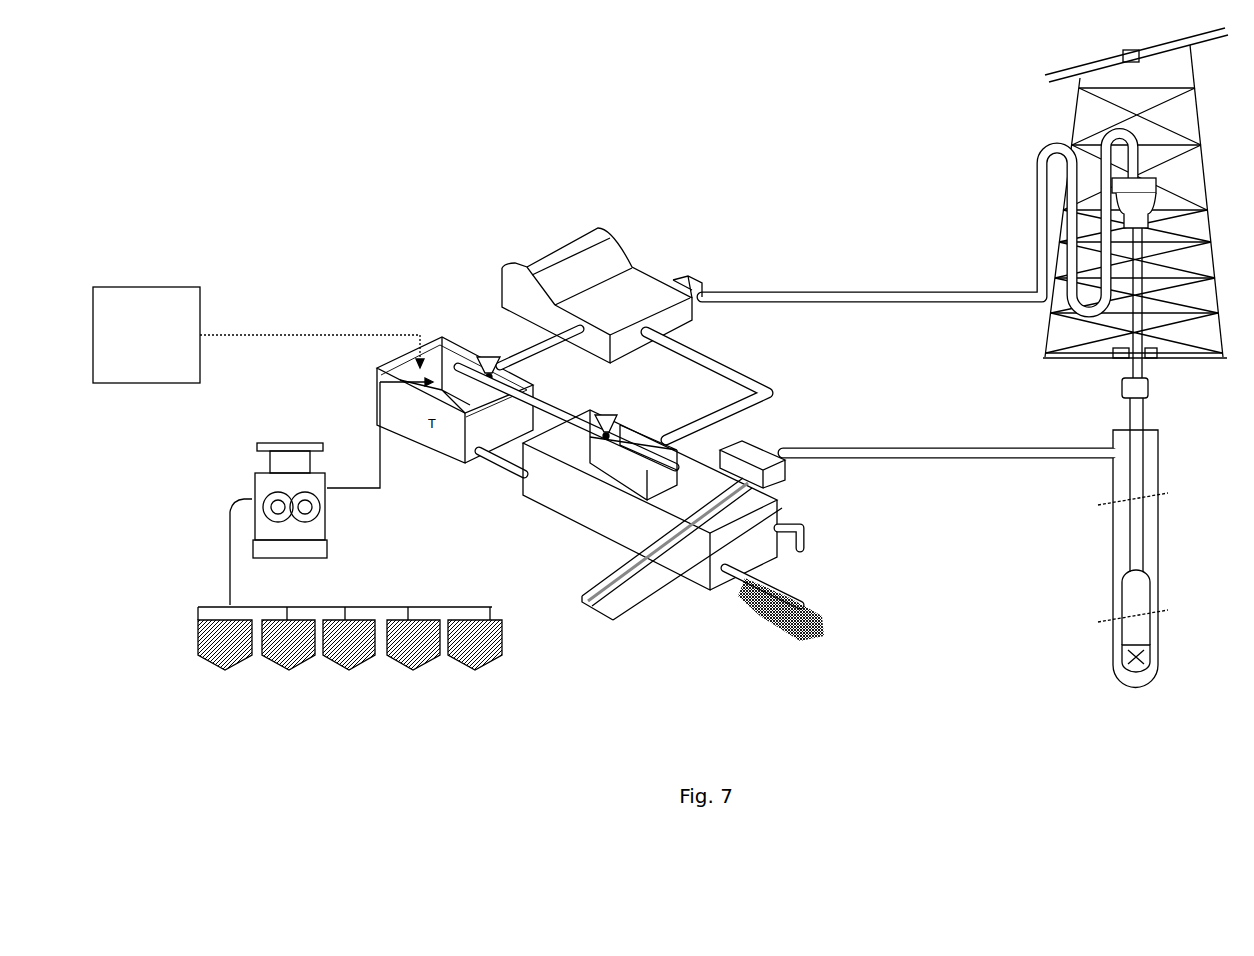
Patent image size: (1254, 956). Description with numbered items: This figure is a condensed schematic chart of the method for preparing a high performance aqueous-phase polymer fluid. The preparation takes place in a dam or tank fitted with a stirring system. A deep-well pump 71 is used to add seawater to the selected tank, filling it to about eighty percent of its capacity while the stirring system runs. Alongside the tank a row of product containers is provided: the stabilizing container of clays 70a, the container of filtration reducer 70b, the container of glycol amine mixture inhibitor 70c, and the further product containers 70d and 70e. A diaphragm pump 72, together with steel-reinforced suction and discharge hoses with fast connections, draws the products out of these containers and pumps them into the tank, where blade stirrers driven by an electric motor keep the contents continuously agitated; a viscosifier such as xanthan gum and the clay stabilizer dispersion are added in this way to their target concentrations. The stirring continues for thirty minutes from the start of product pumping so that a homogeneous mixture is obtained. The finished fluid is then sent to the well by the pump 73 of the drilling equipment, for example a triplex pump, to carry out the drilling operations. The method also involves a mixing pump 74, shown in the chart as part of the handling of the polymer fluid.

The stabilizing container of clays 70a is at (225, 690).
The container of filtration reducer 70b is at (283, 690).
The container of glycol amine mixture inhibitor 70c is at (345, 690).
The product container 70d is at (413, 690).
The product container 70e is at (472, 690).
The deep-well pump 71 is at (146, 335).
The diaphragm pump 72 is at (335, 525).
The pump 73 is at (655, 265).
The mixing pump 74 is at (816, 602).